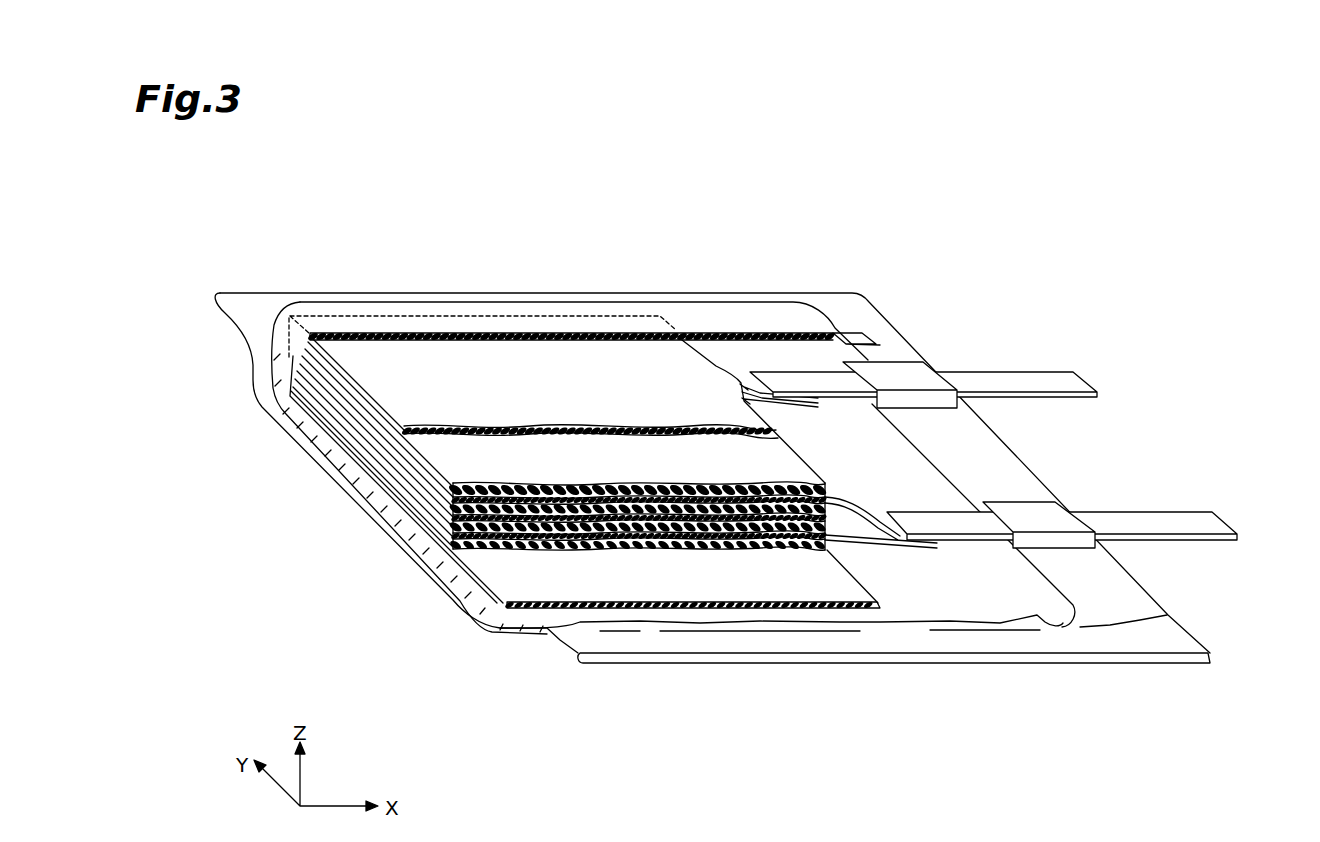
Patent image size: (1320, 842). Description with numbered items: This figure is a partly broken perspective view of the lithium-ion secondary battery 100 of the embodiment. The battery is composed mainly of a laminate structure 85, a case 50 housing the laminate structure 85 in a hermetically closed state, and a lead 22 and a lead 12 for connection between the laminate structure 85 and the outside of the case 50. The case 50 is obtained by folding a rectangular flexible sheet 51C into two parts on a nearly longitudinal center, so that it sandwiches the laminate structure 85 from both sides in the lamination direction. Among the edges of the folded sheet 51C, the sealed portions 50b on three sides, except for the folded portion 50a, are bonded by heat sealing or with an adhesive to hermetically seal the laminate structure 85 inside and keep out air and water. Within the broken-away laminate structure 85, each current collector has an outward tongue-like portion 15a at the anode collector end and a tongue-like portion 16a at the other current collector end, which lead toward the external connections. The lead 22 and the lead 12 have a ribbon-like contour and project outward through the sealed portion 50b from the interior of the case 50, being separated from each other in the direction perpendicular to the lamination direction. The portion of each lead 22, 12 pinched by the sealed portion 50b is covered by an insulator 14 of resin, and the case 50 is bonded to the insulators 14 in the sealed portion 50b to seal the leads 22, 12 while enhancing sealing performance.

The lithium-ion secondary battery 100 is at (716, 168).
The case 50 is at (543, 291).
The folded portion 50a is at (262, 350).
The sealed portion 50b is at (623, 301).
The rectangular flexible sheet 51C is at (692, 301).
The laminate structure 85 is at (345, 420).
The tongue-like portion 15a is at (745, 383).
The tongue-like portion 16a is at (855, 508).
The insulator 14 is at (917, 372).
The lead 12 is at (1085, 383).
The lead 22 is at (1225, 519).